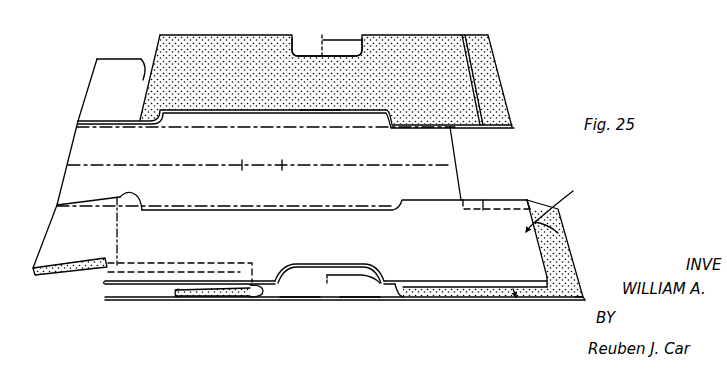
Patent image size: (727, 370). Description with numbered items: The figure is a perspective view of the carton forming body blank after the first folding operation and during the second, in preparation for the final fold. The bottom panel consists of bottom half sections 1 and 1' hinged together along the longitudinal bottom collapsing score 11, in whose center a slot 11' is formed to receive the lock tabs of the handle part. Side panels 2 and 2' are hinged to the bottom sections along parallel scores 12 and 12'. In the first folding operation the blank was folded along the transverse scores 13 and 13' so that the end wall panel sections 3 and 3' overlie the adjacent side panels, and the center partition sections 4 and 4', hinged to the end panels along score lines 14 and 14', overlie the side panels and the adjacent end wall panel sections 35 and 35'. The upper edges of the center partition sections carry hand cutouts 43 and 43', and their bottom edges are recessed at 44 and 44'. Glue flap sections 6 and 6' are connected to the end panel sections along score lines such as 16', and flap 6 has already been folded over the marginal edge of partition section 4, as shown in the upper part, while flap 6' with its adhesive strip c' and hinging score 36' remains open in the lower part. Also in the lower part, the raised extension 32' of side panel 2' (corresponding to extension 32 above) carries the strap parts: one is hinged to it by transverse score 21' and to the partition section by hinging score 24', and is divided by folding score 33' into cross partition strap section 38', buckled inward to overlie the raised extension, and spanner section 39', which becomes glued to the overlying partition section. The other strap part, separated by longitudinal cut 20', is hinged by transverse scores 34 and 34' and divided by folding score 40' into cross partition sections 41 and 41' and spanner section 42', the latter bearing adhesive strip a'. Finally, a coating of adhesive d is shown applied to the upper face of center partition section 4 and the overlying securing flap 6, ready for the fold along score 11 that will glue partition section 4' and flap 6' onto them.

The bottom half section 1 is at (278, 92).
The bottom half section 1' is at (290, 199).
The side panel 2 is at (279, 139).
The side panel 2' is at (186, 243).
The end wall panel section 3 is at (119, 51).
The end wall panel section 3' is at (88, 219).
The center partition section 4 is at (309, 66).
The center partition section 4' is at (422, 258).
The glue flap section 6 is at (493, 81).
The glue flap section 6' is at (565, 248).
The collapsible score 11 is at (259, 157).
The slot 11' is at (278, 173).
The score 12 is at (266, 138).
The score 12' is at (226, 195).
The folding score 13 is at (67, 90).
The folding score 13' is at (32, 226).
The score line 14 is at (150, 45).
The score line 14' is at (136, 228).
The score line 16' is at (562, 208).
The longitudinally extending cut 20' is at (368, 270).
The transverse score 21' is at (168, 314).
The hinging score 24' is at (153, 285).
The raised extension 32 is at (296, 33).
The raised extension 32' is at (300, 310).
The folding score 33' is at (269, 312).
The transverse score 34 is at (314, 31).
The transverse score 34' is at (315, 313).
The end wall panel section 35 is at (477, 163).
The end wall panel section 35' is at (496, 192).
The hinging score 36' is at (563, 319).
The cross partition strap section 38' is at (212, 311).
The spanner section 39' is at (190, 308).
The folding score 40' is at (399, 313).
The cross partition section 41 is at (351, 34).
The cross partition section 41' is at (360, 312).
The spanner section 42' is at (451, 320).
The hand cutout 43 is at (342, 34).
The hand cutout 43' is at (329, 263).
The recess 44 is at (326, 120).
The recess 44' is at (257, 199).
The strip of adhesive a' is at (345, 310).
The strip of adhesive c' is at (581, 250).
The coating of adhesive d is at (412, 52).